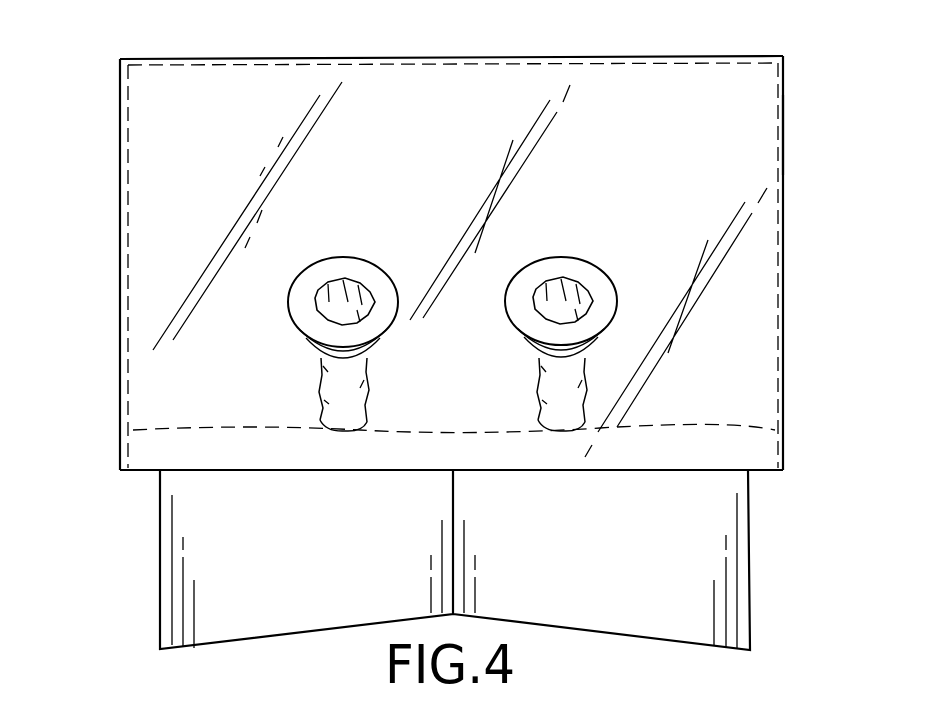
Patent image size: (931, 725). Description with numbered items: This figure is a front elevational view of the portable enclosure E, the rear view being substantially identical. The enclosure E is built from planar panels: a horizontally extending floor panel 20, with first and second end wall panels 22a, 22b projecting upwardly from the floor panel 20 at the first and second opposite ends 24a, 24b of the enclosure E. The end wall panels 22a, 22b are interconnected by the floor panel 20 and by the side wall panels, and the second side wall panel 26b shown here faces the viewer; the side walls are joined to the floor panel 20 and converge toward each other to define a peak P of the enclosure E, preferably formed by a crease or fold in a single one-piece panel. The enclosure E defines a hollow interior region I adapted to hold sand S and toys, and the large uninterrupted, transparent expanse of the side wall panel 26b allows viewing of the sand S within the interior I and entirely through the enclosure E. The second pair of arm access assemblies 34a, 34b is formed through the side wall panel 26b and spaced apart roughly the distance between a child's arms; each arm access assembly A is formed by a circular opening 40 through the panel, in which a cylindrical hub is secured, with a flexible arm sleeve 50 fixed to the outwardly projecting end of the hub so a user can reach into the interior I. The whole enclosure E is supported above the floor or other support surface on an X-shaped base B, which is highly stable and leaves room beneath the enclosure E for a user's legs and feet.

The peak P is at (536, 56).
The first end 24a is at (121, 56).
The second end 24b is at (767, 52).
The floor panel 20 is at (192, 466).
The portable enclosure E is at (791, 168).
The interior region I is at (131, 236).
The first end wall panel 22a is at (117, 302).
The second end wall panel 22b is at (790, 307).
The sand S is at (723, 428).
The second side wall panel 26b is at (474, 122).
The arm access assembly 34a is at (396, 262).
The arm access assembly 34b is at (598, 262).
The arm access assembly A is at (295, 261).
The circular opening 40 is at (331, 358).
The flexible arm sleeve 50 is at (333, 418).
The base B is at (157, 526).